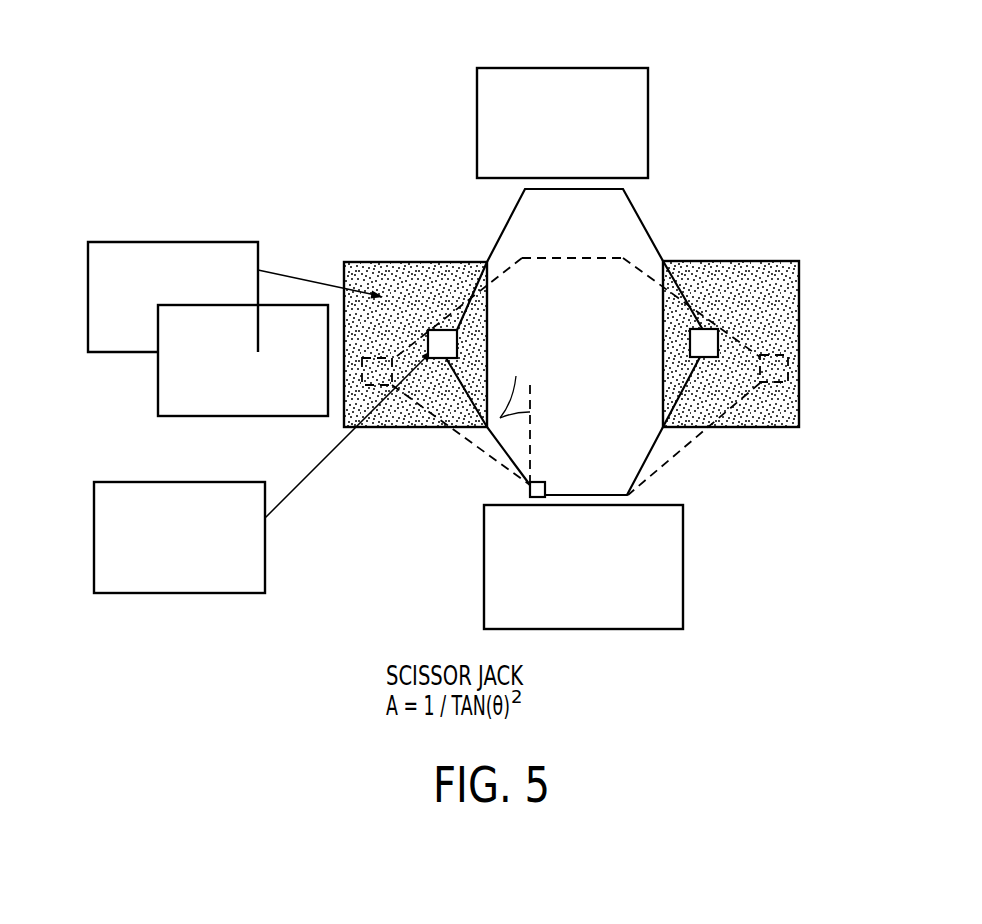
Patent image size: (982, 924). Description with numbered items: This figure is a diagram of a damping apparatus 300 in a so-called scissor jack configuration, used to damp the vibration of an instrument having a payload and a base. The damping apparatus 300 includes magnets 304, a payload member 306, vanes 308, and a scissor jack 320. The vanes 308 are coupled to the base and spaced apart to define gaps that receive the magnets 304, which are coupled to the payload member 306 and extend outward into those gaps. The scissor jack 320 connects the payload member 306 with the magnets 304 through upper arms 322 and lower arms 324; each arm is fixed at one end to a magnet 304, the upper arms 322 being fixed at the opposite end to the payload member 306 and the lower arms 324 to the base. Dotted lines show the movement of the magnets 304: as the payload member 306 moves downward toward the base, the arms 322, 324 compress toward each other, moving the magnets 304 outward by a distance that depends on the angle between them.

The damping apparatus 300 is at (176, 151).
The magnets 304 is at (109, 526).
The payload member 306 is at (577, 189).
The vanes 308 is at (108, 283).
The scissor jack 320 is at (830, 192).
The upper arms 322 is at (502, 233).
The lower arms 324 is at (503, 450).